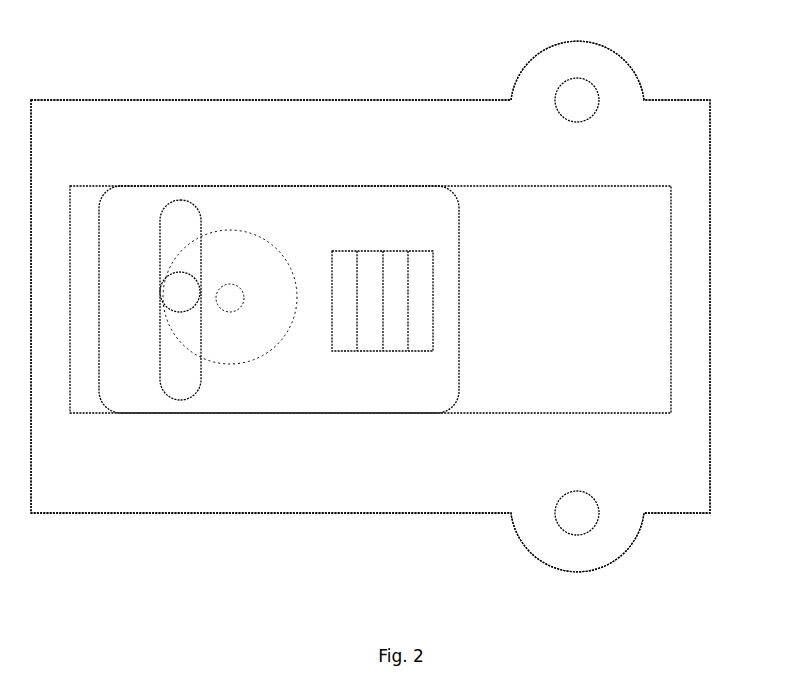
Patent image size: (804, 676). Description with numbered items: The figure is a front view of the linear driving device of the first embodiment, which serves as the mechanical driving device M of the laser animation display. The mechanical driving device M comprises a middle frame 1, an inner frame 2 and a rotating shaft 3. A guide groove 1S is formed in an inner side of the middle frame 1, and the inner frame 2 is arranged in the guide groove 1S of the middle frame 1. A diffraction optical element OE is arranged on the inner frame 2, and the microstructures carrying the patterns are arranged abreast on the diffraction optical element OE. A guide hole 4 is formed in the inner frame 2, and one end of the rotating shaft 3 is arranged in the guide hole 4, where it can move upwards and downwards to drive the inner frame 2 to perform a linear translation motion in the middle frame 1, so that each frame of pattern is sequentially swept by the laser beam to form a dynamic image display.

The middle frame 1 is at (356, 130).
The guide groove 1S is at (606, 205).
The inner frame 2 is at (226, 200).
The rotating shaft 3 is at (176, 303).
The guide hole 4 is at (173, 207).
The diffraction optical element OE is at (370, 351).
The mechanical driving device M is at (686, 515).